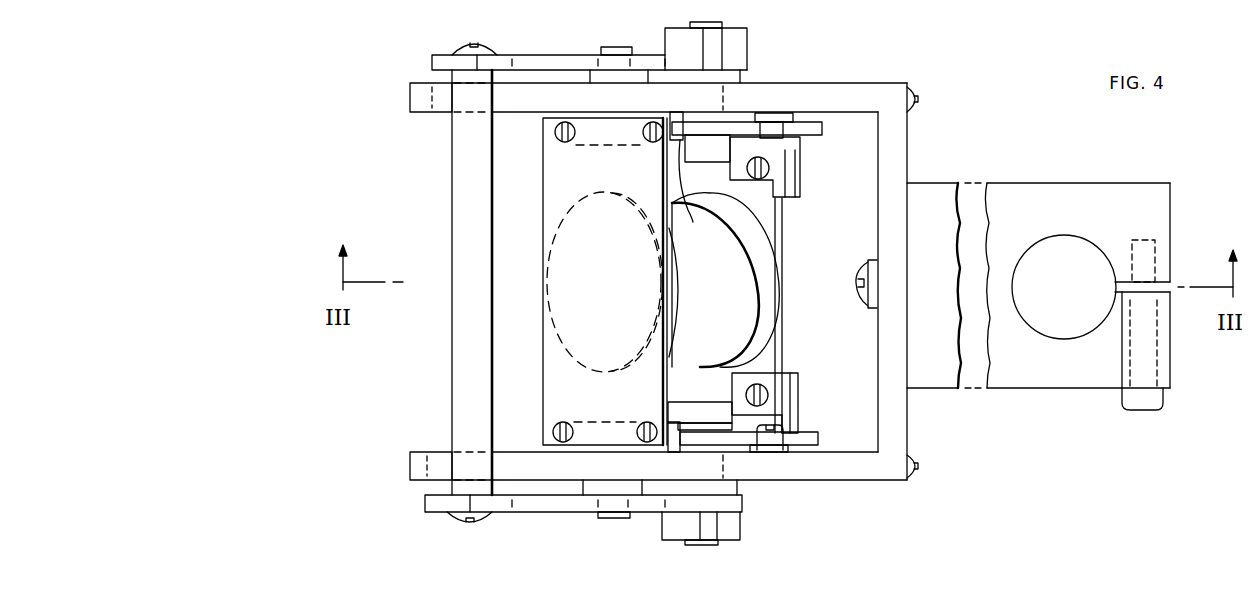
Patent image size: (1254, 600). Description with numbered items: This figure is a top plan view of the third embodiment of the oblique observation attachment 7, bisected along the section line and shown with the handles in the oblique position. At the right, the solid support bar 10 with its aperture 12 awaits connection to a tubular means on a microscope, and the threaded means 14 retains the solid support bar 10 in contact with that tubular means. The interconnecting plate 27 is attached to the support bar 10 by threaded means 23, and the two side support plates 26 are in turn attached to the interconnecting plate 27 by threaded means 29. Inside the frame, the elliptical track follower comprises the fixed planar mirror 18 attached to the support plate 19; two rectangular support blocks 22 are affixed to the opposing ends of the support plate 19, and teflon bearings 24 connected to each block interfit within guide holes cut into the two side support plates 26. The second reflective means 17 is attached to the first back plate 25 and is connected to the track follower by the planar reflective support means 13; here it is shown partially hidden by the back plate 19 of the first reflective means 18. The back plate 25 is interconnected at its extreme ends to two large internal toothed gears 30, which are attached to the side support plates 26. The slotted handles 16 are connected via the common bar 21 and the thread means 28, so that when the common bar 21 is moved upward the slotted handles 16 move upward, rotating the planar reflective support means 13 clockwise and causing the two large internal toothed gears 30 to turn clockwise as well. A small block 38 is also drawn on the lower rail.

The oblique observation attachment 7 is at (873, 52).
The solid support bar 10 is at (1052, 380).
The aperture 12 is at (1063, 243).
The planar reflective support means 13 is at (708, 532).
The threaded means 14 is at (1148, 410).
The slotted handles 16 is at (555, 505).
The fixed planar reflective means 17 is at (758, 323).
The fixed planar mirror 18 is at (677, 287).
The support plate 19 is at (557, 389).
The common bar 21 is at (463, 389).
The rectangular support blocks 22 is at (692, 174).
The threaded means 23 is at (860, 262).
The teflon bearings 24 is at (620, 518).
The first back plate 25 is at (778, 366).
The side support plates 26 is at (852, 475).
The interconnecting plate 27 is at (898, 150).
The thread means 28 is at (462, 518).
The threaded means 29 is at (918, 470).
The large internal toothed gears 30 is at (807, 432).
The block 38 is at (770, 447).